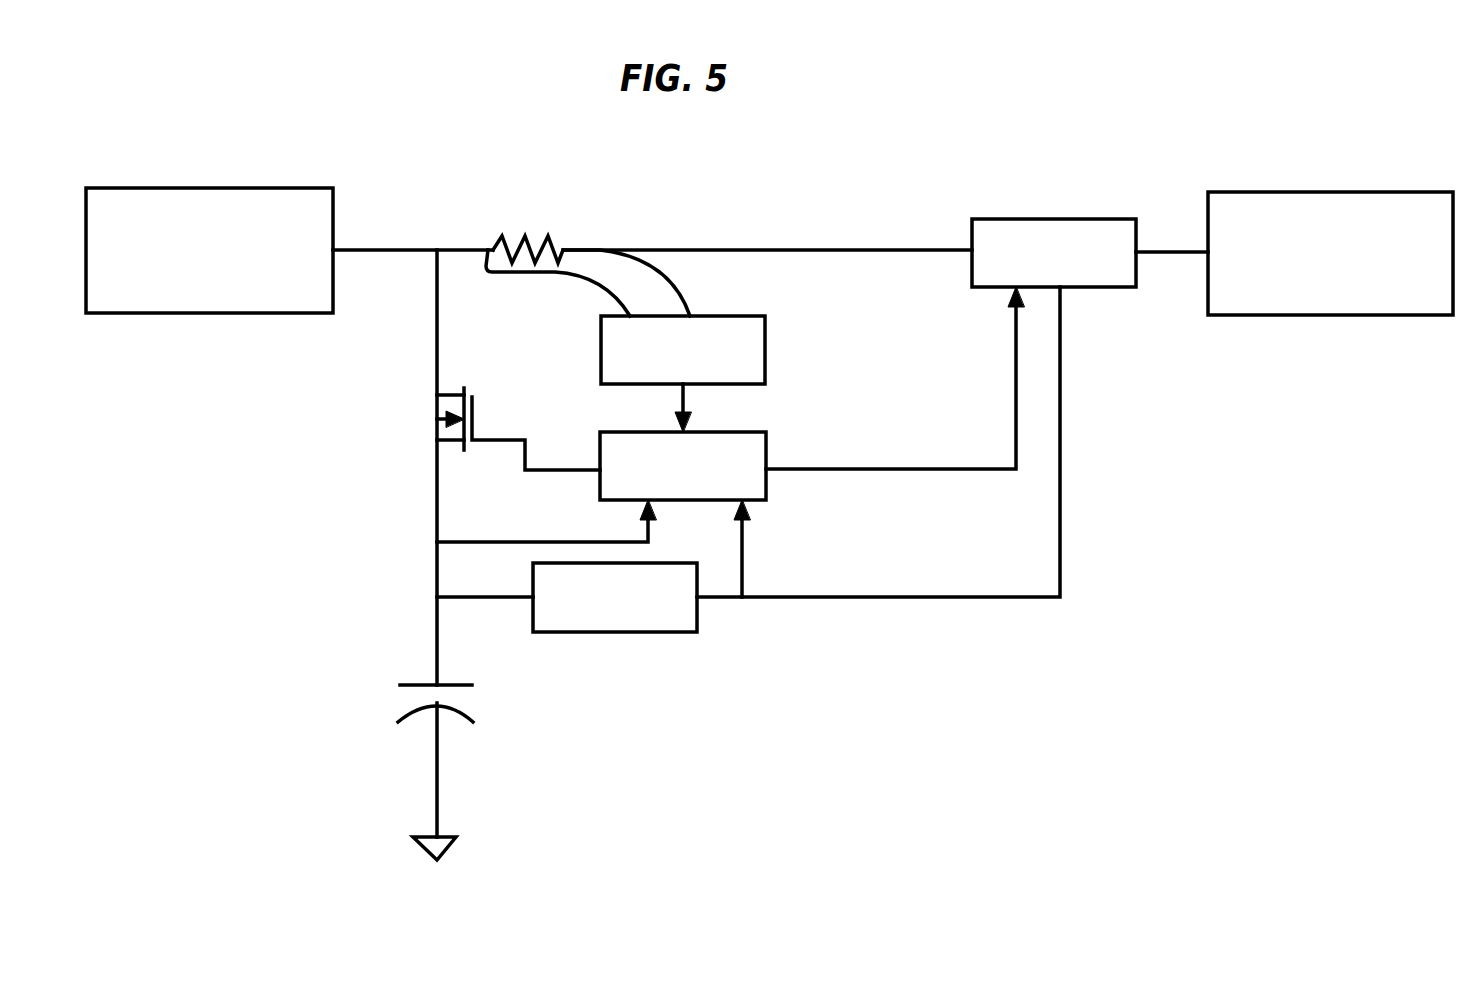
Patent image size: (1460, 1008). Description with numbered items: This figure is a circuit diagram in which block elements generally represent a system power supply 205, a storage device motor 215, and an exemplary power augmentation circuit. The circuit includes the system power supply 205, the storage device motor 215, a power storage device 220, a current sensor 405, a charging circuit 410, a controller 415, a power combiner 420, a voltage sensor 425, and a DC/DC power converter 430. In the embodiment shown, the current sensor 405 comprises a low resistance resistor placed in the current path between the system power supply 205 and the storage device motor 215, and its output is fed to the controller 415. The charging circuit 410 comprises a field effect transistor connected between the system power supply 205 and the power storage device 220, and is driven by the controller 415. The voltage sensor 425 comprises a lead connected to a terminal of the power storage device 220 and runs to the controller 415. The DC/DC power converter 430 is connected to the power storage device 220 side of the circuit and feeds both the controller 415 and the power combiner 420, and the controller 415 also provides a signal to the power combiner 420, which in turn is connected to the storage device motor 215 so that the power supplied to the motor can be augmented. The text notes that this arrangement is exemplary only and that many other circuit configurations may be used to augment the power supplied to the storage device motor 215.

The system power supply 205 is at (121, 188).
The storage device motor 215 is at (1251, 192).
The power storage device 220 is at (400, 697).
The current sensor 405 is at (766, 343).
The charging circuit 410 is at (432, 415).
The controller 415 is at (728, 432).
The power combiner 420 is at (1006, 219).
The voltage sensor 425 is at (480, 542).
The DC/DC power converter 430 is at (585, 632).